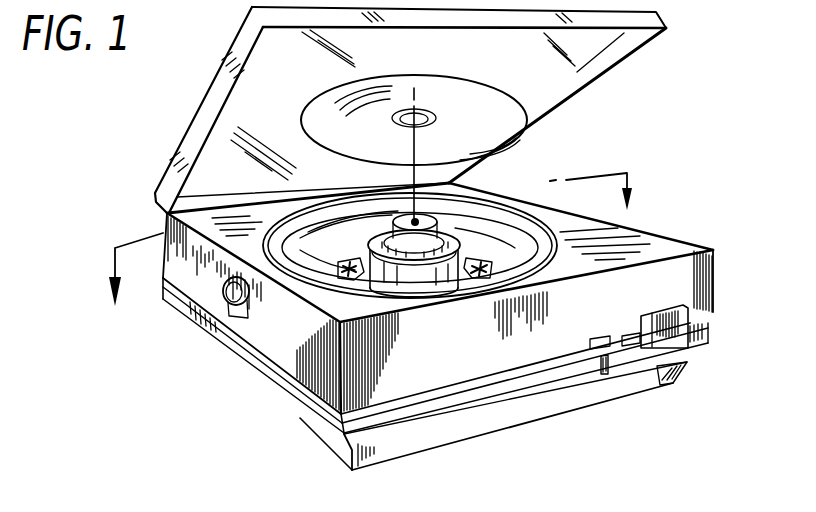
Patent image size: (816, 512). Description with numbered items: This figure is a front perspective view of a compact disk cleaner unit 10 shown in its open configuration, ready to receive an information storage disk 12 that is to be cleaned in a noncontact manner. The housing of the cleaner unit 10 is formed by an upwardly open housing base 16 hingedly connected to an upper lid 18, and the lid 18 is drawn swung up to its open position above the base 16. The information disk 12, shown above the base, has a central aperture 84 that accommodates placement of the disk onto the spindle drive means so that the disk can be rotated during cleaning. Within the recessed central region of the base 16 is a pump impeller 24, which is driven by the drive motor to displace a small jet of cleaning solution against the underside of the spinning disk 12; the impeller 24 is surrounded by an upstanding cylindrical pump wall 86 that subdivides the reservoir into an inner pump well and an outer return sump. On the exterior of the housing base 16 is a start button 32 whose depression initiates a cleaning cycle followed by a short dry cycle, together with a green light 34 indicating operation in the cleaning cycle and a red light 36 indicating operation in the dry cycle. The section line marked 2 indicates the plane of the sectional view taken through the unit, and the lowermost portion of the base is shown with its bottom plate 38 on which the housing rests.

The cleaner unit 10 is at (108, 166).
The information storage disk 12 is at (322, 128).
The upper lid 18 is at (662, 20).
The central aperture 84 is at (546, 116).
The pump impeller 24 is at (450, 243).
The cylindrical pump wall 86 is at (349, 270).
The housing base 16 is at (236, 376).
The base plate 38 is at (409, 425).
The red light 36 is at (650, 370).
The start button 32 is at (675, 333).
The green light 34 is at (604, 364).
The section line 2- 2 is at (367, 218).